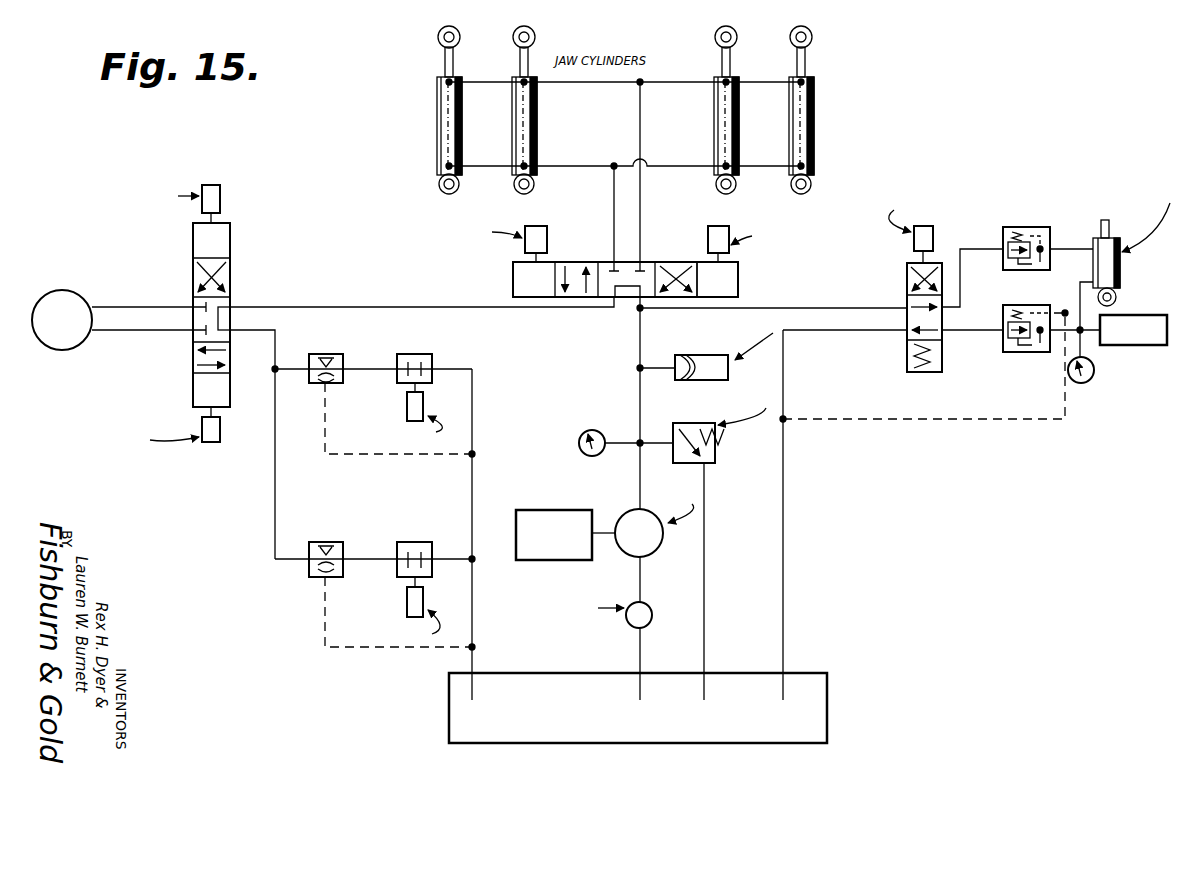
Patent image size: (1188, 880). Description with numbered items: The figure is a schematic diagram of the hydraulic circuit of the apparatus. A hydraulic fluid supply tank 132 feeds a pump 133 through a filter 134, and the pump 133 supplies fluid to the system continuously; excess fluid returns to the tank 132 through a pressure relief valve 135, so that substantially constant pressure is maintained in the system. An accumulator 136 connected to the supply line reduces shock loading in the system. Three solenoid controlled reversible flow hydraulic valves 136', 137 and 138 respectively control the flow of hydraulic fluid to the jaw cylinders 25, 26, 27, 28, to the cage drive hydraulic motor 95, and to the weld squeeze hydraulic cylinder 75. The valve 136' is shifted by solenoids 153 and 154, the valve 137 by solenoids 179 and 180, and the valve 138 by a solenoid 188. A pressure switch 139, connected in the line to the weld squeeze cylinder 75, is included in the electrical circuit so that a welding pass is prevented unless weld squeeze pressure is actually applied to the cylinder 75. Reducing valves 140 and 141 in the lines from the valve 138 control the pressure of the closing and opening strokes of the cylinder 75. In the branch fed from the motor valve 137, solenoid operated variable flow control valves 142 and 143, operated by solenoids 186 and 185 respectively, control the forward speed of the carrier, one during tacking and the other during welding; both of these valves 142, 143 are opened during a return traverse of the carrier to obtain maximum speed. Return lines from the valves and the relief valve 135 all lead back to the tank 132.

The jaw cylinder 25 is at (447, 137).
The jaw cylinder 26 is at (520, 148).
The jaw cylinder 27 is at (722, 147).
The jaw cylinder 28 is at (803, 147).
The weld squeeze hydraulic cylinder 75 is at (1120, 272).
The cage drive hydraulic motor 95 is at (68, 297).
The hydraulic fluid supply tank 132 is at (578, 683).
The pump 133 is at (645, 540).
The filter 134 is at (680, 612).
The pressure relief valve 135 is at (712, 456).
The accumulator 136 is at (643, 306).
The solenoid controlled reversible flow hydraulic valve 136' is at (756, 279).
The solenoid controlled reversible flow hydraulic valve 137 is at (223, 397).
The solenoid controlled reversible flow hydraulic valve 138 is at (907, 357).
The pressure switch 139 is at (1160, 345).
The reducing valve 140 is at (1005, 352).
The reducing valve 141 is at (1005, 270).
The solenoid operated variable flow control valve 142 is at (397, 572).
The solenoid operated variable flow control valve 143 is at (397, 380).
The solenoid 153 is at (528, 225).
The solenoid 154 is at (722, 225).
The solenoid 179 is at (220, 203).
The solenoid 180 is at (212, 443).
The solenoid 185 is at (425, 406).
The solenoid 186 is at (425, 600).
The solenoid 188 is at (933, 241).